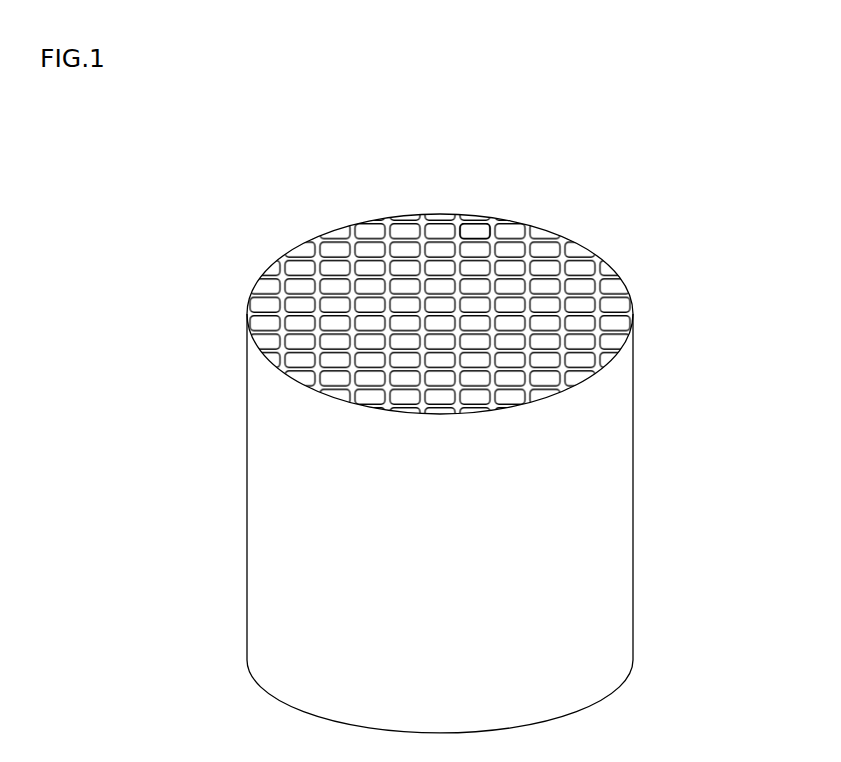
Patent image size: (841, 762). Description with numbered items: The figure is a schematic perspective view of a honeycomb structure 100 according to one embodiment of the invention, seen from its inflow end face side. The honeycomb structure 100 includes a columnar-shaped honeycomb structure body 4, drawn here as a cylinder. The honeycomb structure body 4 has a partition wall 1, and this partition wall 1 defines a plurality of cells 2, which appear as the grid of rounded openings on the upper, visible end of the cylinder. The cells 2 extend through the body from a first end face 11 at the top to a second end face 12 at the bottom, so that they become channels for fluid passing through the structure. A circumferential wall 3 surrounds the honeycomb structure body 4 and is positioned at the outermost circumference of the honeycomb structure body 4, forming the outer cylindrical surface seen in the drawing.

The honeycomb structure 100 is at (698, 114).
The partition wall 1 is at (423, 232).
The cells 2 is at (483, 238).
The circumferential wall 3 is at (633, 390).
The honeycomb structure body 4 is at (636, 473).
The first end face 11 is at (399, 270).
The second end face 12 is at (610, 692).